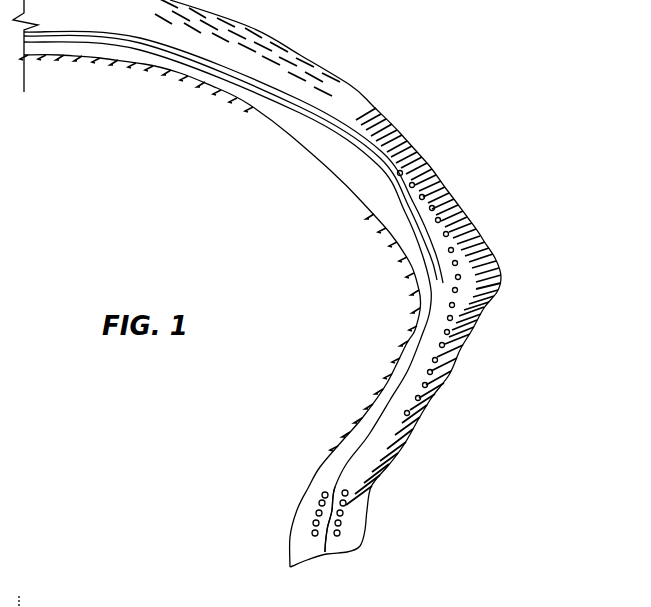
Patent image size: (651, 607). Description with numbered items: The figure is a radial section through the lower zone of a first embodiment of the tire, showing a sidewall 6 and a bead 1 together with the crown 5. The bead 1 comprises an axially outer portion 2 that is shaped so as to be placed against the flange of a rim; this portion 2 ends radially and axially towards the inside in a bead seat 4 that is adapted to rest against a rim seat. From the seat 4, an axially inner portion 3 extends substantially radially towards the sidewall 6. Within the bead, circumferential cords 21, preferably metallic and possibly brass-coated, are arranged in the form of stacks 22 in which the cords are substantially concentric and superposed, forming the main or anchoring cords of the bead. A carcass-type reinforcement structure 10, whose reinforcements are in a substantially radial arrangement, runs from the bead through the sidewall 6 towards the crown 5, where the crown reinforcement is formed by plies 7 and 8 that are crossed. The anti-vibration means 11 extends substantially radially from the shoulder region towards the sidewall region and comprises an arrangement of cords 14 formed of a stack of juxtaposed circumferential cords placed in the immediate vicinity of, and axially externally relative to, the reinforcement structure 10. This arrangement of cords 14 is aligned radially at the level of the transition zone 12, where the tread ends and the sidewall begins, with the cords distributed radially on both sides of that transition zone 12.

The bead 1 is at (311, 534).
The axially outer portion 2 is at (350, 527).
The axially inner portion 3 is at (312, 510).
The bead seat 4 is at (332, 560).
The crown 5 is at (69, 303).
The sidewall 6 is at (412, 387).
The ply 7 is at (331, 200).
The ply 8 is at (233, 157).
The reinforcement structure 10 is at (288, 108).
The anti-vibration means 11 is at (452, 317).
The transition zone 12 is at (506, 278).
The arrangement of cords 14 is at (443, 345).
The circumferential cords 21 is at (348, 503).
The stacks 22 is at (322, 480).